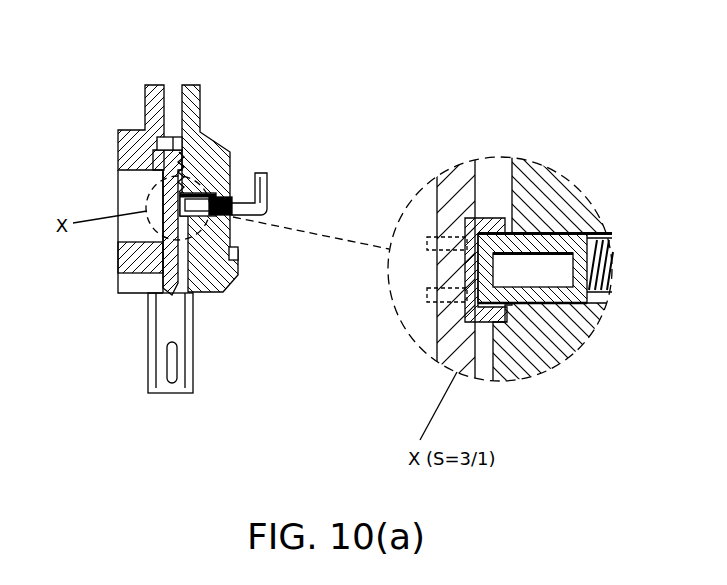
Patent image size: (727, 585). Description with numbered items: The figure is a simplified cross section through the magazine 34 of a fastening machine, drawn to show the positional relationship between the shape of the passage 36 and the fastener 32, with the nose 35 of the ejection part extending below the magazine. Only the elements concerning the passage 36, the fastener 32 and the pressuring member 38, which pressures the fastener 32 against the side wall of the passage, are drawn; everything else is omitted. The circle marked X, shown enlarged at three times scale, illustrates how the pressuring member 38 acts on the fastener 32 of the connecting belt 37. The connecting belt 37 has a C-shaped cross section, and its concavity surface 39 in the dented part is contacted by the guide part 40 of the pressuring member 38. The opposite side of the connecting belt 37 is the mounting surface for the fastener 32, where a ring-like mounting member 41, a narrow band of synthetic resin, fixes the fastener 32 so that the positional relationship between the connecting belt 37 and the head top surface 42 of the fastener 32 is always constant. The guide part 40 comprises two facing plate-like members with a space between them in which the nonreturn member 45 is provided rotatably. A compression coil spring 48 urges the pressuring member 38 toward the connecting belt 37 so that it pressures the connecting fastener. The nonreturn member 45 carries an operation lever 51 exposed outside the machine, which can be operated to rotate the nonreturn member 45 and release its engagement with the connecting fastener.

The magazine 34 is at (88, 71).
The head top surface 42 is at (168, 145).
The passage 36 is at (183, 146).
The pressuring member 38 is at (231, 172).
The connecting belt 37 is at (163, 191).
The operation lever 51 is at (268, 190).
The nonreturn member 45 is at (236, 253).
The fastener 32 is at (187, 294).
The nose 35 is at (167, 330).
The guide part 40 is at (487, 233).
The compression coil spring 48 is at (603, 252).
The mounting member 41 is at (427, 300).
The concavity surface 39 is at (550, 340).